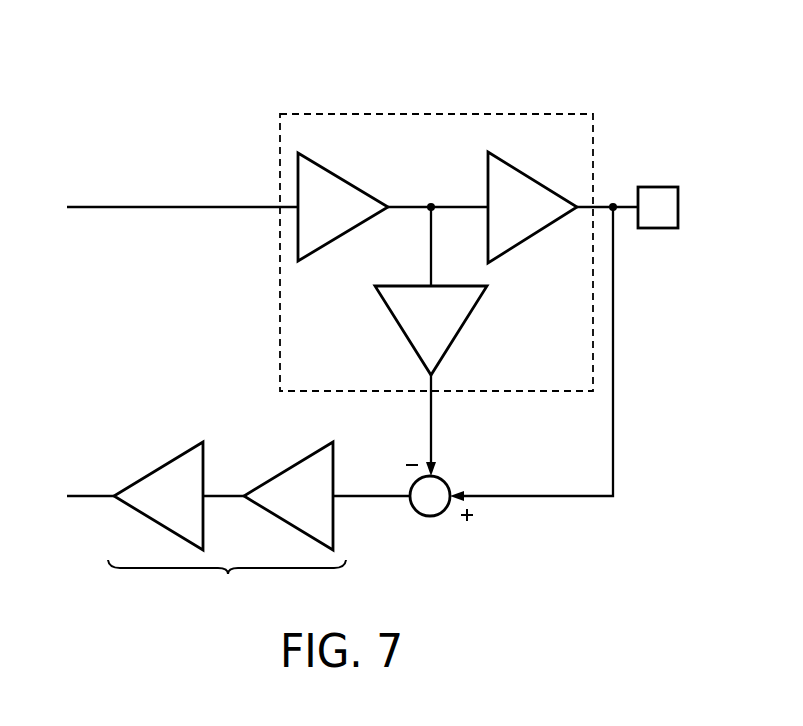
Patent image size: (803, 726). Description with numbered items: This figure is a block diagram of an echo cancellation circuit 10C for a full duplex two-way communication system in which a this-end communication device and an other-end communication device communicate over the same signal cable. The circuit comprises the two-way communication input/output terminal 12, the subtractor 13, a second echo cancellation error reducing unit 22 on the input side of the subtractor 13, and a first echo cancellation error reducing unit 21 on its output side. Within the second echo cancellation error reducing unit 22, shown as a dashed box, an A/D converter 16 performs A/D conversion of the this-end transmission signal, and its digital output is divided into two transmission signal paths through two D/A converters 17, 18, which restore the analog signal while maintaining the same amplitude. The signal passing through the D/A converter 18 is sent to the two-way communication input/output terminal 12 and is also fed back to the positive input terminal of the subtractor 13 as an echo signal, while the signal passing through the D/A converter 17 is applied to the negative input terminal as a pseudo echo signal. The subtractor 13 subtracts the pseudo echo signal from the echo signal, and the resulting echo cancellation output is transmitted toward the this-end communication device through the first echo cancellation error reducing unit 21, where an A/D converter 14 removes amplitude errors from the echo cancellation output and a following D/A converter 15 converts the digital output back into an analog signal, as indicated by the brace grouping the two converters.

The signal processing circuit 10C is at (431, 88).
The second echo cancellation error reducing unit 22 is at (330, 114).
The A/D converter 16 is at (340, 177).
The D/A converter 18 is at (533, 178).
The D/A converter 17 is at (463, 325).
The two-way communication input/output terminal 12 is at (655, 187).
The subtractor 13 is at (444, 480).
The digital-to-analog converter 15 is at (160, 465).
The A/D converter 14 is at (288, 465).
The first echo cancellation error reducing unit 21 is at (227, 584).